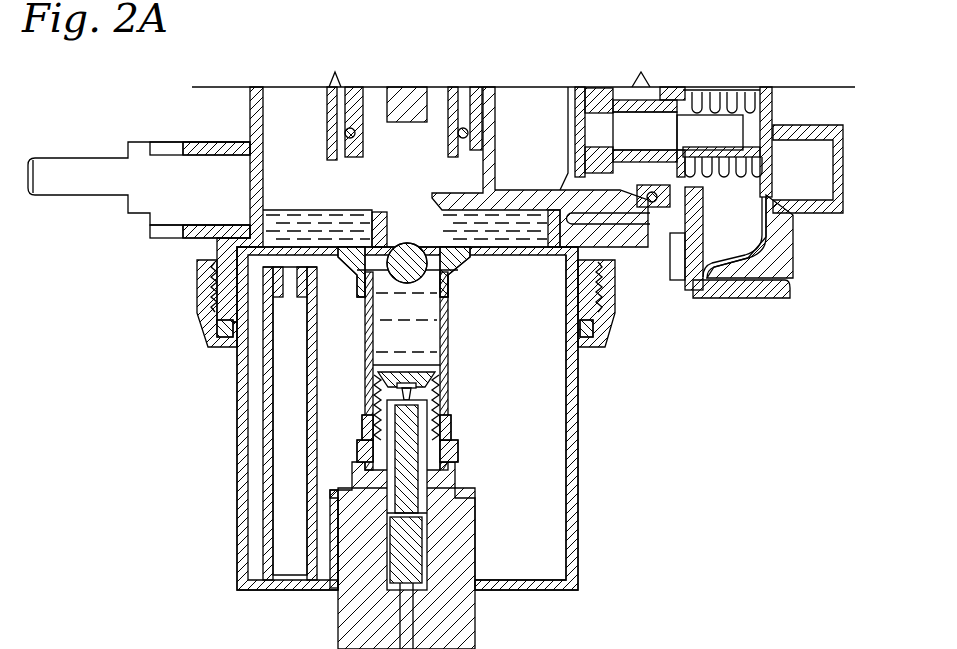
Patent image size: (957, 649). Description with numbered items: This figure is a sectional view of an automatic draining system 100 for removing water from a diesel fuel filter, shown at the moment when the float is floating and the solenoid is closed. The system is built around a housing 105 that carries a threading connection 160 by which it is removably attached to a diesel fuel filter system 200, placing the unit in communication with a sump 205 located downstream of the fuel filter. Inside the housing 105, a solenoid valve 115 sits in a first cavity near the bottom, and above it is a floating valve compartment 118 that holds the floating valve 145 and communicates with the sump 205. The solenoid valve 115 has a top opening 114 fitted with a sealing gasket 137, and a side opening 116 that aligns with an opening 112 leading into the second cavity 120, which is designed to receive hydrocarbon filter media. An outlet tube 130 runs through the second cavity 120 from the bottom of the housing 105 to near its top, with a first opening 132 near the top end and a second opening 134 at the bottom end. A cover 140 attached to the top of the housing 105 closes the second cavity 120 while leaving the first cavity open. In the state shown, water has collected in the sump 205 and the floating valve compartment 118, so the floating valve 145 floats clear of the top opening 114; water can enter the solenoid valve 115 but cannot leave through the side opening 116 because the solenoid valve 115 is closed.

The automatic draining system 100 is at (662, 515).
The housing 105 is at (575, 532).
The opening 112 is at (367, 457).
The top opening 114 is at (448, 368).
The solenoid valve 115 is at (475, 623).
The side opening 116 is at (427, 450).
The floating valve compartment 118 is at (378, 362).
The second cavity 120 is at (547, 432).
The outlet tube 130 is at (283, 488).
The first opening 132 is at (200, 282).
The second opening 134 is at (290, 580).
The sealing gasket 137 is at (410, 372).
The cover 140 is at (245, 205).
The floating valve 145 is at (388, 328).
The threading connection 160 is at (200, 313).
The diesel fuel filter system 200 is at (741, 68).
The sump 205 is at (305, 213).